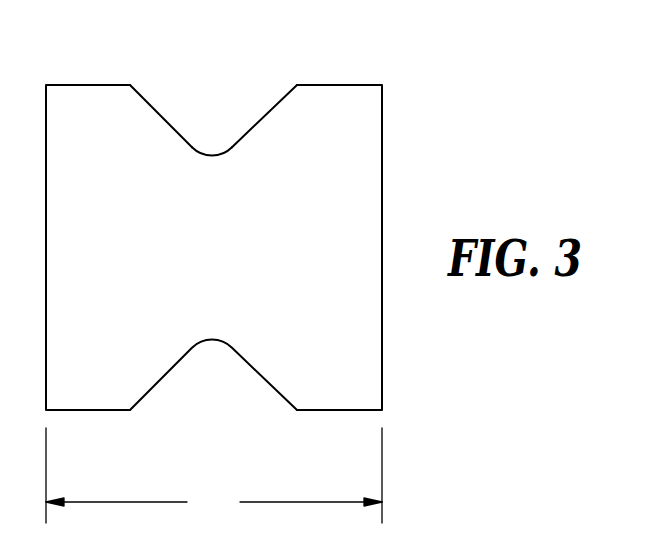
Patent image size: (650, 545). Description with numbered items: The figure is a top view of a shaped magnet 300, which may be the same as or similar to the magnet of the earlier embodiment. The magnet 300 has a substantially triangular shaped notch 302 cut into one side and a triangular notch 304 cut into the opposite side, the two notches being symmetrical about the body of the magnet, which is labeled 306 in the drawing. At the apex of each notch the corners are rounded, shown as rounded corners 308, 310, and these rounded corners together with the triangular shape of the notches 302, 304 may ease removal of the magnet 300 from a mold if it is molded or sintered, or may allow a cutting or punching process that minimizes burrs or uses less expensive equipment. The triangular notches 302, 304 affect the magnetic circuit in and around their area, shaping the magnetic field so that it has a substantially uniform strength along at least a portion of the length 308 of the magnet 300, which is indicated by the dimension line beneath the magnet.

The magnet 300 is at (410, 98).
The substantially triangular shaped notch 302 is at (232, 97).
The triangular notch 304 is at (226, 388).
The body 306 is at (233, 260).
The rounded corner / length 308 is at (233, 344).
The rounded corner 310 is at (233, 151).